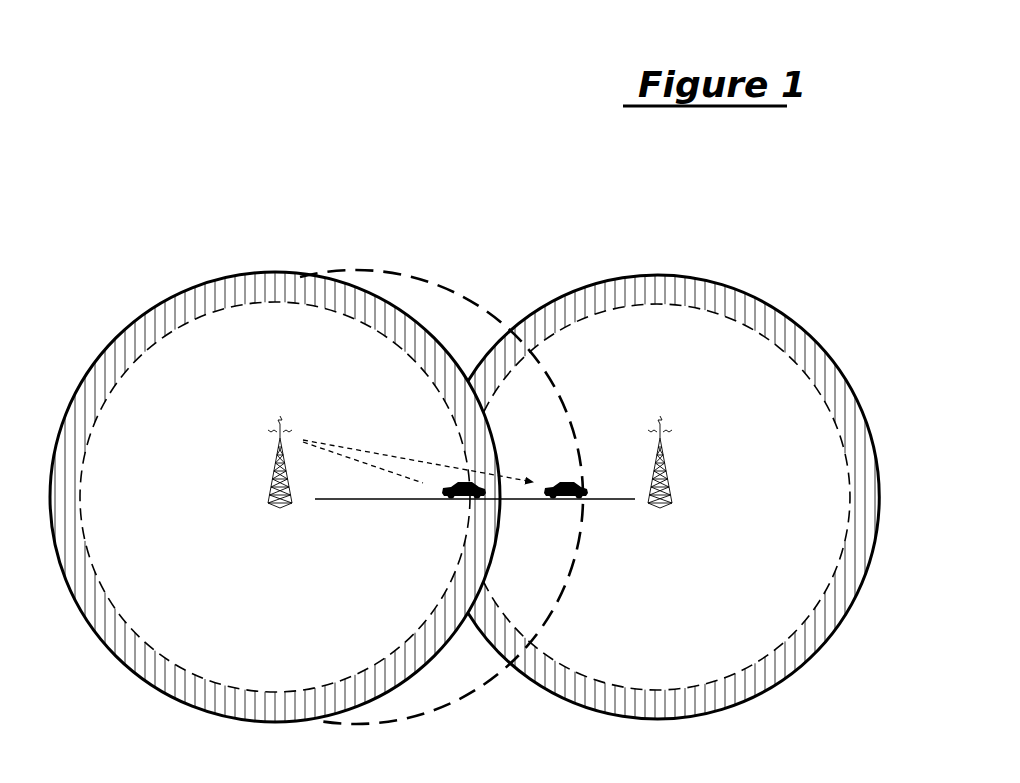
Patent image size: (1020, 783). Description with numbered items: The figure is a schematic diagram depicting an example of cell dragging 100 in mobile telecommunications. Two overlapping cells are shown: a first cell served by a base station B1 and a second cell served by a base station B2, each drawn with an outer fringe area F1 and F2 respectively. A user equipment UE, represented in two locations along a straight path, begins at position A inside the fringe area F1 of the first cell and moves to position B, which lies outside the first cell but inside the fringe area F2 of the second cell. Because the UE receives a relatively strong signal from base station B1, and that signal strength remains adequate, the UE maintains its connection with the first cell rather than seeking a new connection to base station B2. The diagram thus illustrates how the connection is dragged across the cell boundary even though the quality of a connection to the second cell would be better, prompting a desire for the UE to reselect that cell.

The cell dragging 100 is at (406, 282).
The fringe area of Cell#1 F1 is at (134, 350).
The fringe area of Cell#2 F2 is at (782, 330).
The base station of Cell#1 B1 is at (270, 482).
The base station of Cell#2 B2 is at (667, 484).
The position A is at (464, 471).
The position B is at (566, 471).
The user equipment UE is at (515, 515).